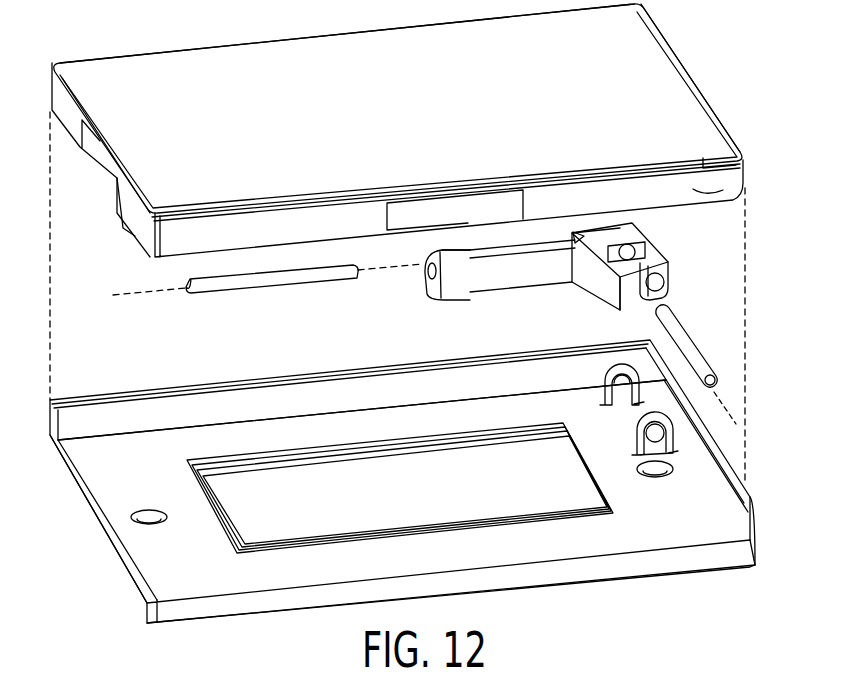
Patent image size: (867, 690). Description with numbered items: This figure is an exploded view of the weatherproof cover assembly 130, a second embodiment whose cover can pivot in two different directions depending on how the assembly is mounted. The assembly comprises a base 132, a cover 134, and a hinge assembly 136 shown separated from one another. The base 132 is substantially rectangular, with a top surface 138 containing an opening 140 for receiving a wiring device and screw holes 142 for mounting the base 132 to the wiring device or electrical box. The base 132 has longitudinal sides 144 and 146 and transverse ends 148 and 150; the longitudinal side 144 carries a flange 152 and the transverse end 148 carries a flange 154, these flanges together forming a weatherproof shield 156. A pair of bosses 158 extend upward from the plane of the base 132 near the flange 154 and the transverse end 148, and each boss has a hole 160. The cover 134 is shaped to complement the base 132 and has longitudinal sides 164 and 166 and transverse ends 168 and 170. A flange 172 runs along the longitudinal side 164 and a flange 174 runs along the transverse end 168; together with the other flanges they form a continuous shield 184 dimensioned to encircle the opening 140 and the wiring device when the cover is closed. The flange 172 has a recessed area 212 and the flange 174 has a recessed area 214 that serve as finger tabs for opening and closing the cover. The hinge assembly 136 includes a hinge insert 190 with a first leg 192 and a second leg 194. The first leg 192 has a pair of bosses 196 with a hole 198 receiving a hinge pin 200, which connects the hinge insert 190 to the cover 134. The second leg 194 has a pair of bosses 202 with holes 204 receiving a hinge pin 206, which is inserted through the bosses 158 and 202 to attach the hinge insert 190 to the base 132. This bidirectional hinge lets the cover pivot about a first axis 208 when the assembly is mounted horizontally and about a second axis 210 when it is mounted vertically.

The weatherproof cover assembly 130 is at (784, 143).
The base 132 is at (672, 590).
The cover 134 is at (690, 50).
The hinge assembly 136 is at (705, 283).
The top surface 138 is at (637, 537).
The opening 140 is at (276, 519).
The screw holes 142 is at (145, 524).
The longitudinal side 144 is at (78, 458).
The longitudinal side 146 is at (213, 597).
The transverse end 148 is at (716, 518).
The transverse end 150 is at (127, 598).
The flange 152 is at (322, 393).
The flange 154 is at (737, 463).
The weatherproof shield 156 is at (214, 372).
The bosses 158 is at (607, 373).
The hole 160 is at (622, 372).
The longitudinal side 164 is at (307, 197).
The longitudinal side 166 is at (292, 32).
The transverse end 168 is at (132, 173).
The transverse end 170 is at (688, 78).
The flange 172 is at (743, 181).
The flange 174 is at (127, 223).
The continuous shield 184 is at (178, 244).
The hinge insert 190 is at (500, 286).
The first leg 192 is at (462, 290).
The second leg 194 is at (597, 290).
The bosses 196 is at (572, 232).
The hole 198 is at (420, 268).
The hinge pin 200 is at (291, 292).
The bosses 202 is at (618, 247).
The holes 204 is at (626, 244).
The hinge pin 206 is at (703, 353).
The first axis 208 is at (130, 295).
The second axis 210 is at (728, 407).
The recessed area 212 is at (420, 217).
The recessed area 214 is at (90, 147).